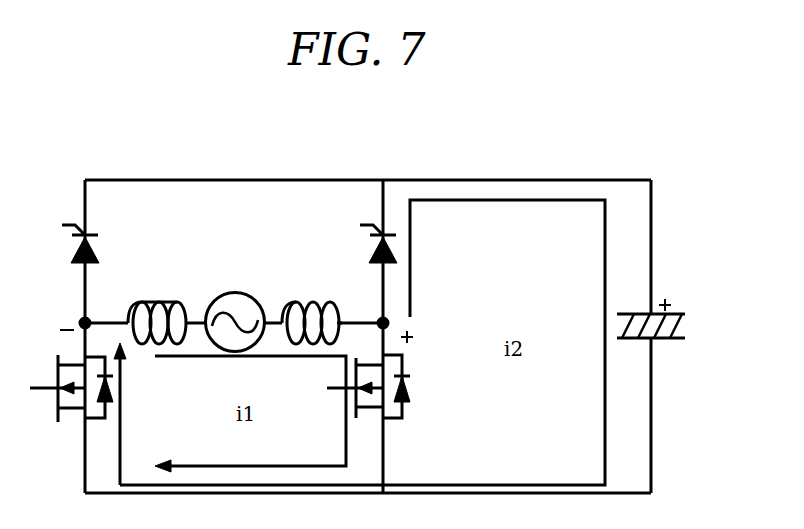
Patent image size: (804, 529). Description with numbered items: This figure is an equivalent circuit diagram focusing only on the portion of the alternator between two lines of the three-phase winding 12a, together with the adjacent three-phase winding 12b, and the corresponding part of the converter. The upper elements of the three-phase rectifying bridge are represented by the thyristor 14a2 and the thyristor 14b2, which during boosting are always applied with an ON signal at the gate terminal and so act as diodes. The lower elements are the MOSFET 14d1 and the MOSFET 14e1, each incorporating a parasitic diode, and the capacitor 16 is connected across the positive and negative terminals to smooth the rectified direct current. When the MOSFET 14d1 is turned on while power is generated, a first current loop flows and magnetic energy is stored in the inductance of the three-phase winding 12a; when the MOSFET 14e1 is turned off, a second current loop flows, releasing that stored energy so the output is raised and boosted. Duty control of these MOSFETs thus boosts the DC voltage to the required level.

The three-phase winding 12a is at (155, 301).
The three-phase winding 12b is at (300, 301).
The thyristor 14a2 is at (97, 236).
The thyristor 14b2 is at (377, 250).
The MOSFET 14d1 is at (58, 408).
The MOSFET 14e1 is at (368, 408).
The capacitor 16 is at (662, 339).